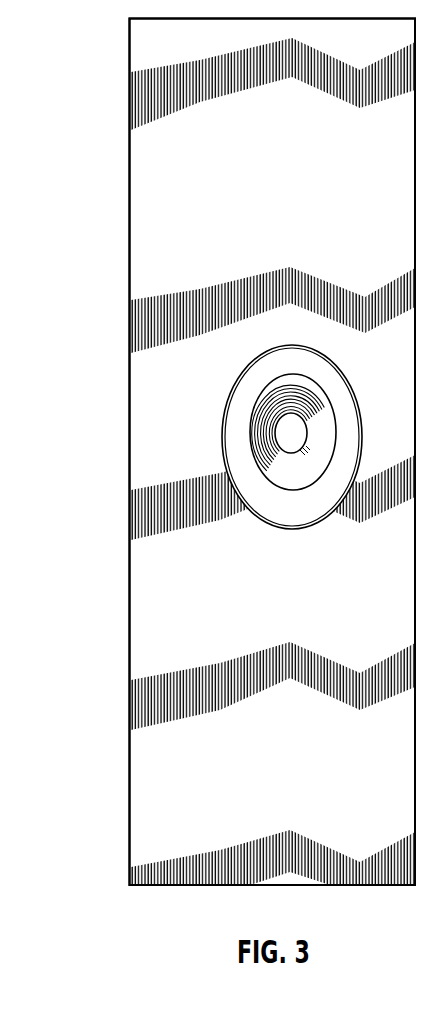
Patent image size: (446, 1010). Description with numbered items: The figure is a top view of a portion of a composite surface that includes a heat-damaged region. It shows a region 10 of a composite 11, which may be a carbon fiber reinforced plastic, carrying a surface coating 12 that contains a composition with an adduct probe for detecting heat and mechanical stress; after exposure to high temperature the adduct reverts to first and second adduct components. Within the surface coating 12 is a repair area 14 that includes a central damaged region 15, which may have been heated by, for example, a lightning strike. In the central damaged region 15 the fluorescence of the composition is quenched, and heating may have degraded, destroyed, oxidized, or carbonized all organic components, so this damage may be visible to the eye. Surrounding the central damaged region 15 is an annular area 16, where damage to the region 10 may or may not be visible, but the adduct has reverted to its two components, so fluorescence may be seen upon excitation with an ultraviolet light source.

The region 10 is at (149, 244).
The composite 11 is at (73, 595).
The surface coating 12 is at (147, 310).
The repair area 14 is at (267, 356).
The central damaged region 15 is at (312, 416).
The annular area 16 is at (266, 508).